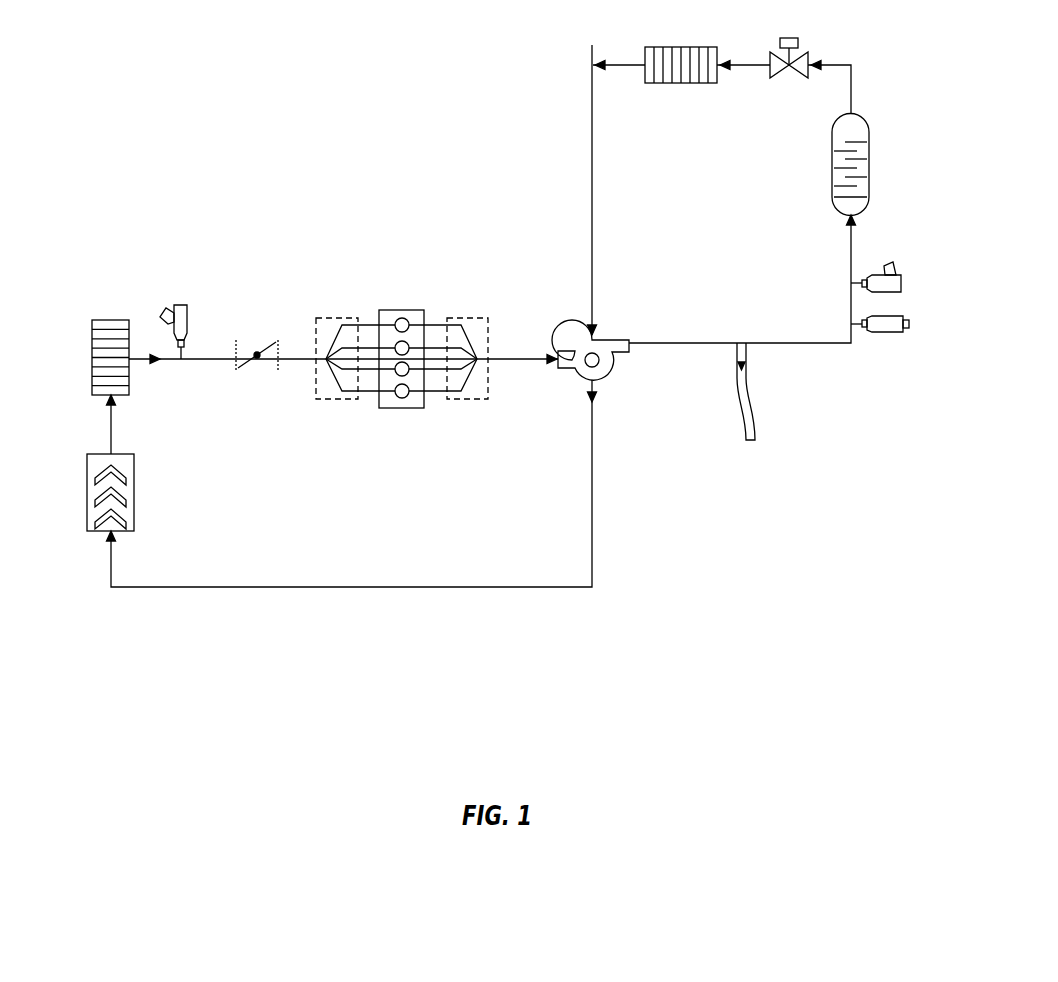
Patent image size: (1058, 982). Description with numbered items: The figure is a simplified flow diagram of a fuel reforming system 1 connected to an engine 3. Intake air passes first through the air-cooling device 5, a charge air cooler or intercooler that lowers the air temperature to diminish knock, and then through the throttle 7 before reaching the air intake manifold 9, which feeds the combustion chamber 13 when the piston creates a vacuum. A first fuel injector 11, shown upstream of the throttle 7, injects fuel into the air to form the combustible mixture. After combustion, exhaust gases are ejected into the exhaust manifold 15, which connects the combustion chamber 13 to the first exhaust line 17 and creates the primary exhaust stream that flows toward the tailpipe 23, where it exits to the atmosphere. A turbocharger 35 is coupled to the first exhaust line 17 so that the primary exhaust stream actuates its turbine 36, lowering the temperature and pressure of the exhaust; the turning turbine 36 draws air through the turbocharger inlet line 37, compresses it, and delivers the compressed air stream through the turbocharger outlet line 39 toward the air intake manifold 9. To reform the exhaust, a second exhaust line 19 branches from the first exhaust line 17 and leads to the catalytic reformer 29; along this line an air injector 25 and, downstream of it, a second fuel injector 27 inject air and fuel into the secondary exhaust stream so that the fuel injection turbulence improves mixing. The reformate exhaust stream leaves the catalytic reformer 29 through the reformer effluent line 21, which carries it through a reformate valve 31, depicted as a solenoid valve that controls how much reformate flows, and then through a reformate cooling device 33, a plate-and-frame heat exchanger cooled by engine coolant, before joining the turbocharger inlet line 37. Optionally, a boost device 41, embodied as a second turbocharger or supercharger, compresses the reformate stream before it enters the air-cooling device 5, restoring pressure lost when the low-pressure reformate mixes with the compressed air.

The fuel reforming system 1 is at (540, 24).
The engine 3 is at (406, 367).
The air-cooling device 5 is at (111, 320).
The throttle 7 is at (258, 372).
The air intake manifold 9 is at (338, 318).
The first fuel injector 11 is at (180, 305).
The combustion chamber 13 is at (402, 398).
The exhaust manifold 15 is at (467, 318).
The first exhaust line 17 is at (527, 361).
The second exhaust line 19 is at (853, 250).
The reformer effluent line 21 is at (620, 66).
The tailpipe 23 is at (753, 398).
The air injector 25 is at (910, 323).
The second fuel injector 27 is at (905, 283).
The catalytic reformer 29 is at (870, 162).
The reformate valve 31 is at (790, 38).
The reformate cooling device 33 is at (685, 47).
The turbocharger 35 is at (600, 352).
The turbine 36 is at (597, 365).
The turbocharger inlet line 37 is at (592, 270).
The turbocharger outlet line 39 is at (592, 426).
The boost device 41 is at (87, 492).